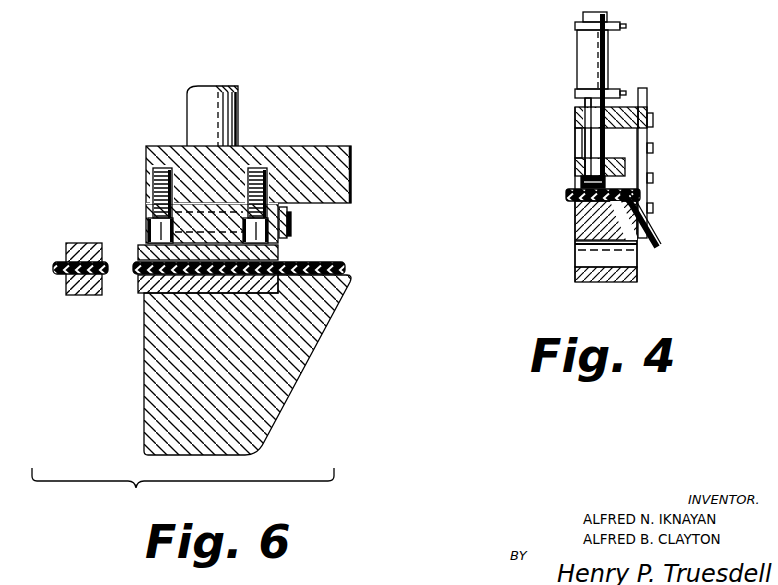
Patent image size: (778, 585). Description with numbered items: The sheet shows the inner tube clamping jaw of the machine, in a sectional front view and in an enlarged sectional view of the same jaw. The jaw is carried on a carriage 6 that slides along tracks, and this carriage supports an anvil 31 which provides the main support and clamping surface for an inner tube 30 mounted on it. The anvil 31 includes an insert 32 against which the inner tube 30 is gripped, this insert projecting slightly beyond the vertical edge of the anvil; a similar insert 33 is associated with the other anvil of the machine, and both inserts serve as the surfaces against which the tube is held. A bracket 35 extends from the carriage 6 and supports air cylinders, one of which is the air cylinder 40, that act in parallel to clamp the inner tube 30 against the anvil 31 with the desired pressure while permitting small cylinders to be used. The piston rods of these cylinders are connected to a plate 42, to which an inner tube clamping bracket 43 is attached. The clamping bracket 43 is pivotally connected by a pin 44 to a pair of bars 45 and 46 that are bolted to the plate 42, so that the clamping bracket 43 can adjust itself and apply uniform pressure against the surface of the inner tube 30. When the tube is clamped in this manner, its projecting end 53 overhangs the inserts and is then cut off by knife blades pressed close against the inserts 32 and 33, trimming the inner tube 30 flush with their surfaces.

In FIG. 4, the carriage 6 is at (638, 275).
In FIG. 6, the inner tube 30 is at (346, 266).
In FIG. 4, the inner tube 30 is at (650, 232).
In FIG. 6, the anvil 31 is at (290, 377).
In FIG. 4, the anvil 31 is at (590, 218).
In FIG. 6, the insert 32 is at (142, 293).
In FIG. 6, the insert 33 is at (75, 290).
In FIG. 4, the bracket 35 is at (647, 97).
In FIG. 4, the air cylinder 40 is at (600, 50).
In FIG. 6, the plate 42 is at (296, 158).
In FIG. 6, the inner tube clamping bracket 43 is at (280, 253).
In FIG. 6, the pin 44 is at (288, 222).
In FIG. 6, the bar 45 is at (146, 218).
In FIG. 6, the bar 46 is at (245, 160).
In FIG. 4, the projecting end of inner tube 53 is at (568, 197).